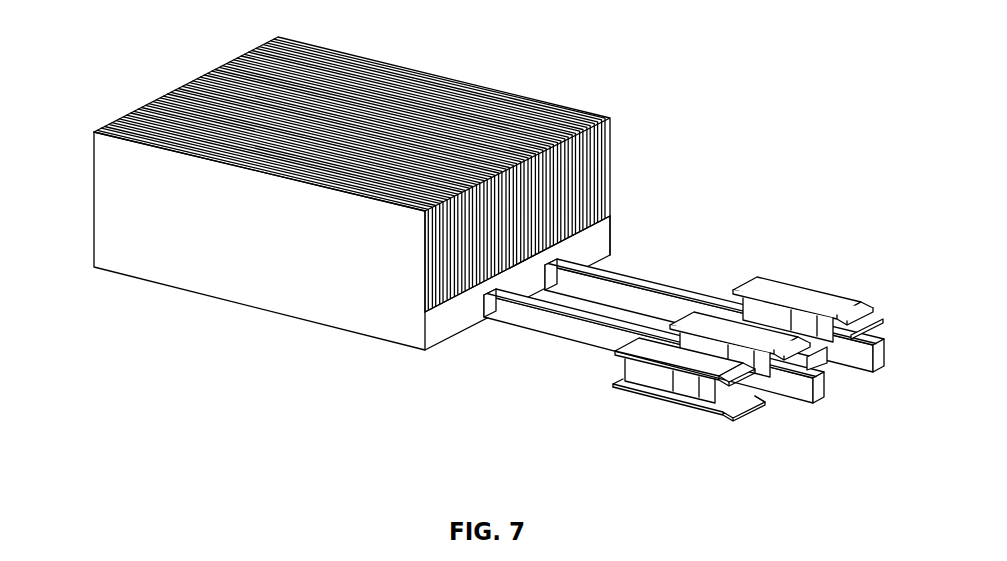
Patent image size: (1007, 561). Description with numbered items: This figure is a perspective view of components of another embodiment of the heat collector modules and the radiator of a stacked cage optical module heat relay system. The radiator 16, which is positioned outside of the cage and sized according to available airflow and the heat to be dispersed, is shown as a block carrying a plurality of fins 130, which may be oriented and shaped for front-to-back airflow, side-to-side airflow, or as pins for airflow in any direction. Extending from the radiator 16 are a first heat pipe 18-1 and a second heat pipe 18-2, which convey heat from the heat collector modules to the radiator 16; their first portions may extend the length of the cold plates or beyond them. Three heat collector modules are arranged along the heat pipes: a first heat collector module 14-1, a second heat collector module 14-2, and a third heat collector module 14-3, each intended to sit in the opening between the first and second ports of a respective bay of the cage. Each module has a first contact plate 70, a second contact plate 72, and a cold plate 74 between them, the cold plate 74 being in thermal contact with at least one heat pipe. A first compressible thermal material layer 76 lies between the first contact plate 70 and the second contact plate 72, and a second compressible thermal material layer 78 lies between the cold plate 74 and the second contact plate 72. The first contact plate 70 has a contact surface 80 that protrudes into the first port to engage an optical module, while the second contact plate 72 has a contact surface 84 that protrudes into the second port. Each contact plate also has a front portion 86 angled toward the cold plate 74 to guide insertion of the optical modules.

The radiator 16 is at (120, 272).
The fins 130 is at (253, 288).
The first heat pipe 18-1 is at (643, 279).
The second heat pipe 18-2 is at (527, 331).
The first heat collector module 14-1 is at (717, 359).
The second heat collector module 14-2 is at (828, 368).
The third heat collector module 14-3 is at (783, 279).
The first contact plate 70 is at (636, 408).
The second contact plate 72 is at (678, 417).
The cold plate 74 is at (681, 415).
The first compressible thermal material layer 76 is at (672, 429).
The second compressible thermal material layer 78 is at (680, 306).
The contact surface 80 is at (698, 311).
The contact surface 84 is at (689, 417).
The front portion 86 is at (806, 404).